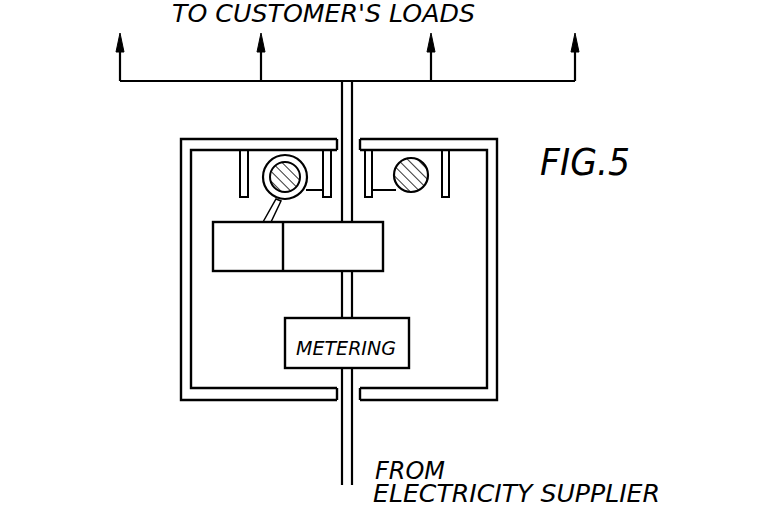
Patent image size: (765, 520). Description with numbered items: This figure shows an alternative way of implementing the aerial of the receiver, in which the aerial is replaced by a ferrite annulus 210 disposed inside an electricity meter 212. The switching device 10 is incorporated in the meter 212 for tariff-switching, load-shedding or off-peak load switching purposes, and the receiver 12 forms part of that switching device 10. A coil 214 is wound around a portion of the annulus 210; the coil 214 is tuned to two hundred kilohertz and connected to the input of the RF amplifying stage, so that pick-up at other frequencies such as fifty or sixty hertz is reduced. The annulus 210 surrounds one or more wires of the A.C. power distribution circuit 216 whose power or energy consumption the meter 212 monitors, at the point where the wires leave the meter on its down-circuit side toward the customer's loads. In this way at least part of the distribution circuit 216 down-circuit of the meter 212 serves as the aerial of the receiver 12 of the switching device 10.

The switching device 10 is at (311, 271).
The receiver 12 is at (298, 235).
The ferrite annulus 210 is at (414, 192).
The electricity meter 212 is at (498, 345).
The coil 214 is at (276, 158).
The A.C. power distribution circuit 216 is at (353, 108).